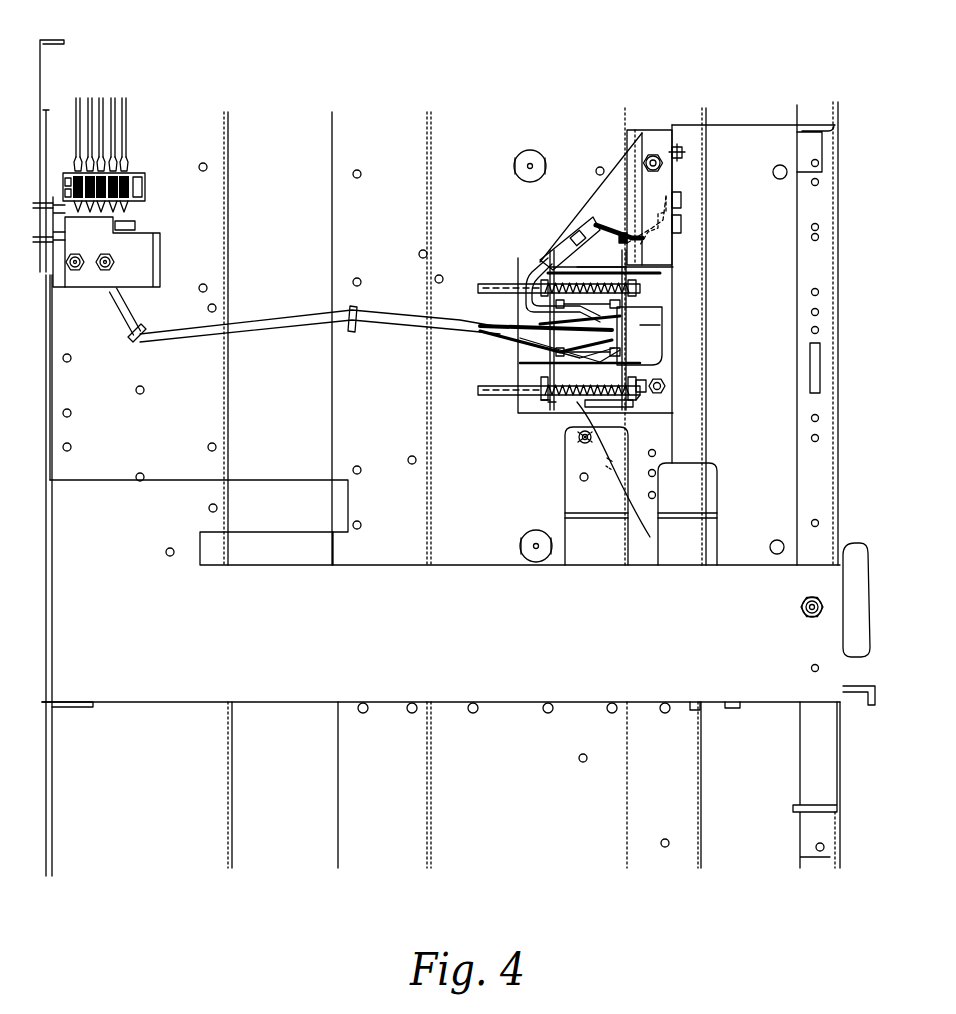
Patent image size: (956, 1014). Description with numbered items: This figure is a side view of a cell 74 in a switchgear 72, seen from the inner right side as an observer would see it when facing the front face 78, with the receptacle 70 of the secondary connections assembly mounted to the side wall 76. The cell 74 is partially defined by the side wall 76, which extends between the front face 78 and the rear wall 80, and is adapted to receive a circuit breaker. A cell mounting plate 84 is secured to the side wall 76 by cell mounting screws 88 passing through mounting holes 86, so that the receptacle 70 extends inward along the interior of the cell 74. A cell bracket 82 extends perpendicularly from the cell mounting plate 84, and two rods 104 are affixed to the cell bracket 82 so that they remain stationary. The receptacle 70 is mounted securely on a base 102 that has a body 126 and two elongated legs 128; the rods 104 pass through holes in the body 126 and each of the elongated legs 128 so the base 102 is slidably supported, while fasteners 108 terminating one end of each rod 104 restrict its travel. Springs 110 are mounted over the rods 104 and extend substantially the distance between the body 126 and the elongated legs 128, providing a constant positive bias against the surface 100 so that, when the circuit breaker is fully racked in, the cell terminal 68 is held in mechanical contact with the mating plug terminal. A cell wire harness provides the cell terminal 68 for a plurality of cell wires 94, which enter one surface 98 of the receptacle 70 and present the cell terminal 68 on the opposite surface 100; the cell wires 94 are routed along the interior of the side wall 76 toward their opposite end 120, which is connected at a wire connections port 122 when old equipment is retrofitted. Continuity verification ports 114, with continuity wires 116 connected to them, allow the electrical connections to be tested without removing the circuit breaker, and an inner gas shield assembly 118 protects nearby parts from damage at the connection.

The cell terminal 68 is at (668, 316).
The receptacle 70 is at (653, 325).
The switchgear 72 is at (93, 657).
The cell 74 is at (393, 148).
The side wall 76 is at (508, 127).
The front face 78 is at (840, 488).
The rear wall 80 is at (45, 428).
The cell bracket 82 is at (545, 405).
The cell mounting plate 84 is at (550, 410).
The mounting holes 86 is at (662, 388).
The cell mounting screws 88 is at (665, 392).
The cell wires 94 is at (498, 338).
The surface of the receptacle 98 is at (567, 400).
The opposite surface of the receptacle 100 is at (625, 300).
The base 102 is at (623, 364).
The rods 104 is at (480, 286).
The fasteners 108 is at (640, 395).
The springs 110 is at (523, 277).
The continuity verification ports 114 is at (682, 223).
The continuity wires 116 is at (613, 228).
The inner gas shield assembly 118 is at (655, 137).
The opposite end of the cell wires 120 is at (120, 310).
The wire connections port 122 is at (83, 264).
The body of the base 126 is at (628, 308).
The elongated legs 128 is at (550, 242).